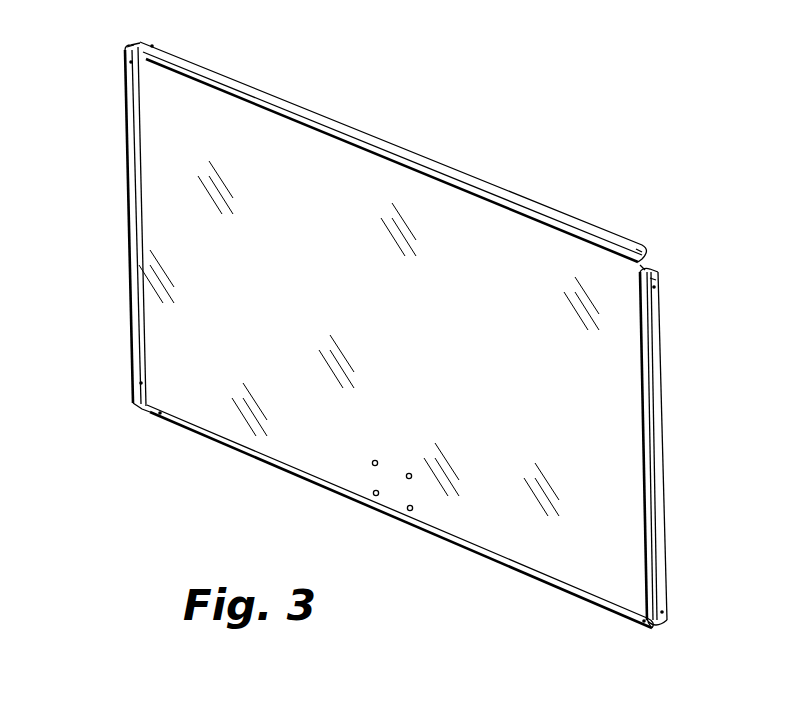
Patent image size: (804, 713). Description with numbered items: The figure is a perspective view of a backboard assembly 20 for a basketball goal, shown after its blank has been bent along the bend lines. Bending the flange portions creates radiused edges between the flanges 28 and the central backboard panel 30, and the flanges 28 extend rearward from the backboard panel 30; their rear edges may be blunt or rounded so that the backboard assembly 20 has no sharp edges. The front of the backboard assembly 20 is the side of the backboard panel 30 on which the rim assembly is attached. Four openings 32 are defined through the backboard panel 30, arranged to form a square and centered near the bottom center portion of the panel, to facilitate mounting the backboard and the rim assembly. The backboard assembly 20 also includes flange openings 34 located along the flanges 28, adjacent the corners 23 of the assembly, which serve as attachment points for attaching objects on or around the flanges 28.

The backboard assembly 20 is at (393, 330).
The corners 23 is at (127, 44).
The flanges 28 is at (418, 158).
The backboard panel 30 is at (165, 354).
The openings 32 is at (371, 496).
The flange openings 34 is at (633, 250).